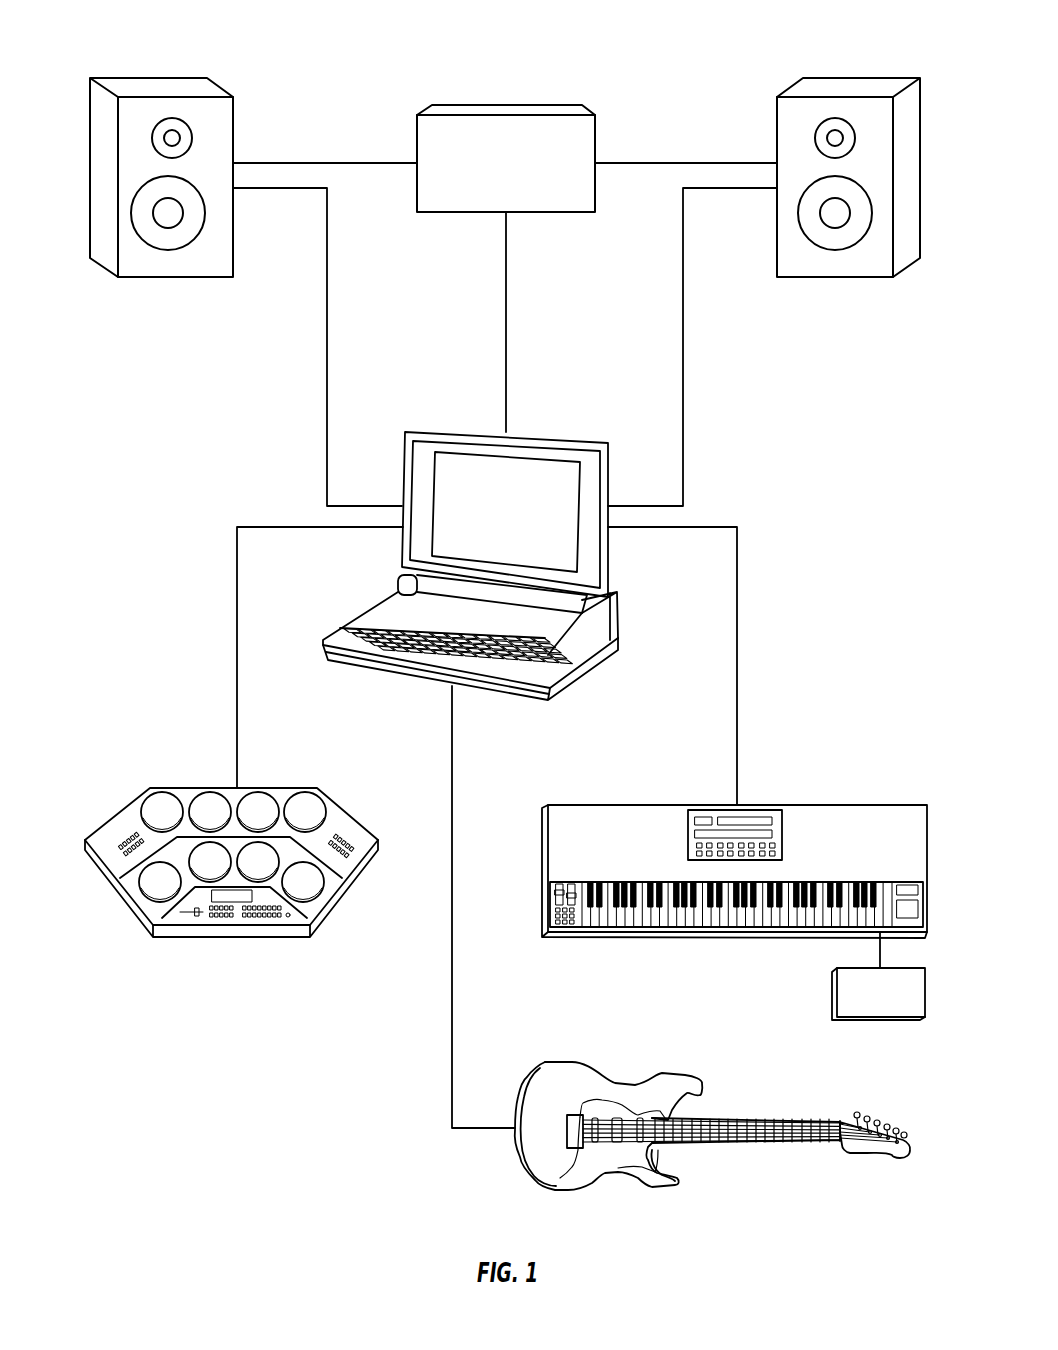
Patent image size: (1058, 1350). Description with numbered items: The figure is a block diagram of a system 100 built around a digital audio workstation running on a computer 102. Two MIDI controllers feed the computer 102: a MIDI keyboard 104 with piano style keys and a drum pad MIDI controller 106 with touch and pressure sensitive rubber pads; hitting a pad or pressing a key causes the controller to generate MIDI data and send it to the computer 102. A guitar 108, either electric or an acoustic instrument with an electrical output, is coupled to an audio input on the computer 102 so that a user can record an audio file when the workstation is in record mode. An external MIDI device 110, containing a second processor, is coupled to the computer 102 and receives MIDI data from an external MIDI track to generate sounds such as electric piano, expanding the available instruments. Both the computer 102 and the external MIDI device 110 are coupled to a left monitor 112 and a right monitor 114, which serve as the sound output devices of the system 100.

The system 100 is at (314, 23).
The computer 102 is at (553, 435).
The MIDI keyboard 104 is at (857, 803).
The drum pad MIDI controller 106 is at (182, 788).
The guitar 108 is at (698, 1077).
The external MIDI device 110 is at (507, 105).
The left monitor 112 is at (158, 77).
The right monitor 114 is at (852, 77).